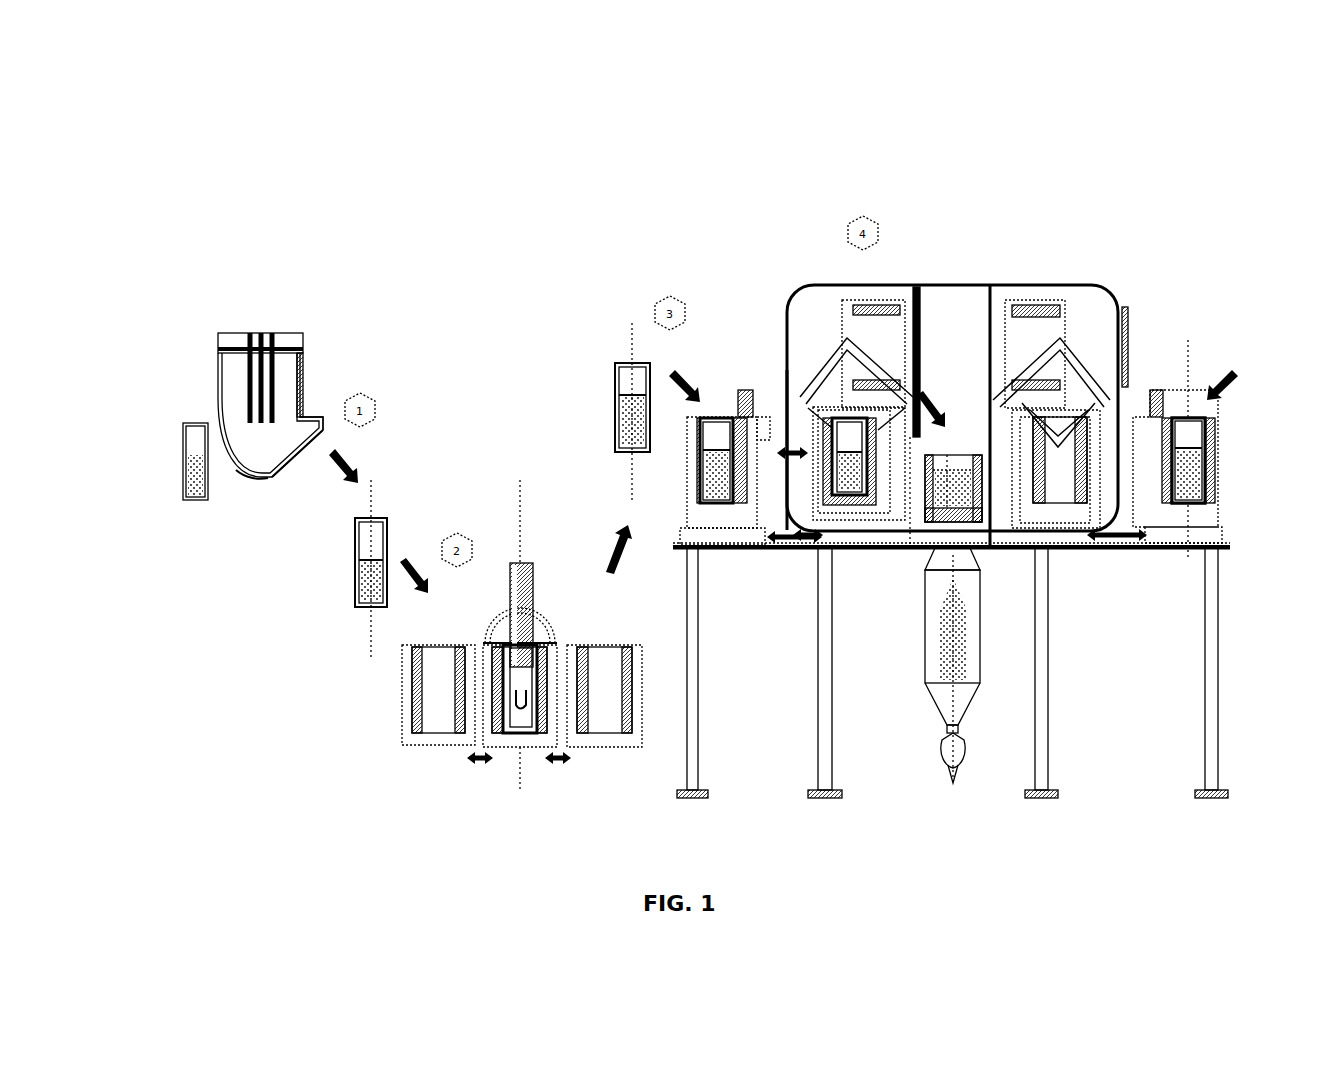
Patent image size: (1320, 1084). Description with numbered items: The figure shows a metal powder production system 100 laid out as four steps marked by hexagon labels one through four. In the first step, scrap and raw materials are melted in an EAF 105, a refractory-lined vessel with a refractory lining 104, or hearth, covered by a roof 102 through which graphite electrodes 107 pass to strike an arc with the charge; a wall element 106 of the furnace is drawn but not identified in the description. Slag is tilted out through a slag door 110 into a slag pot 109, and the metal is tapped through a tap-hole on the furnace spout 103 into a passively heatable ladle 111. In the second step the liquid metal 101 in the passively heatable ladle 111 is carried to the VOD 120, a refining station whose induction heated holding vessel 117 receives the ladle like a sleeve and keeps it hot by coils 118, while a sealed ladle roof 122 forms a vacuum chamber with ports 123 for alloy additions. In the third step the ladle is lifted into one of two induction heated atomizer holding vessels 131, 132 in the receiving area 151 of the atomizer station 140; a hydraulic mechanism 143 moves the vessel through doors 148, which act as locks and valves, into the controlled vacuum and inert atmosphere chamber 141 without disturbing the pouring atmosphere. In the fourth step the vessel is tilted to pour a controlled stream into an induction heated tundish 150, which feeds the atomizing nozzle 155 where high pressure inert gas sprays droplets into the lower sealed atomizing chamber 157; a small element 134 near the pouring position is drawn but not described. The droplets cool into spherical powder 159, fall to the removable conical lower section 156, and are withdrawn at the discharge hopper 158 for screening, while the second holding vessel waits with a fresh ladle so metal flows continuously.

The powder production system 100 is at (586, 146).
The roof 102 is at (217, 331).
The graphite electrodes 107 is at (264, 328).
The furnace side wall 106 is at (306, 352).
The slag door 110 is at (212, 382).
The slag pot 109 is at (182, 422).
The furnace spout 103 is at (324, 413).
The refractory lining 104 is at (274, 472).
The EAF 105 is at (250, 480).
The passively heatable ladle 111 is at (386, 519).
The liquid metal 101 is at (357, 570).
The VOD 120 is at (499, 582).
The ports 123 is at (523, 556).
The sealed ladle roof 122 is at (546, 584).
The coils 118 is at (410, 682).
The induction heated holding vessel 117 is at (410, 746).
The induction heated atomizer holding vessel 131 is at (739, 395).
The atomizer station 140 is at (1016, 282).
The controlled vacuum and inert atmosphere chamber 141 is at (955, 414).
The doors 148 is at (789, 394).
The tundish 150 is at (947, 452).
The collection cup 134 is at (953, 415).
The induction heated atomizer holding vessel 132 is at (1166, 392).
The hydraulic mechanism 143 is at (752, 552).
The receiving area 151 is at (806, 543).
The atomizing nozzle 155 is at (969, 541).
The lower sealed atomizing chamber 157 is at (924, 660).
The spherical powder 159 is at (971, 648).
The removable conical lower section 156 is at (929, 705).
The discharge hopper 158 is at (941, 748).